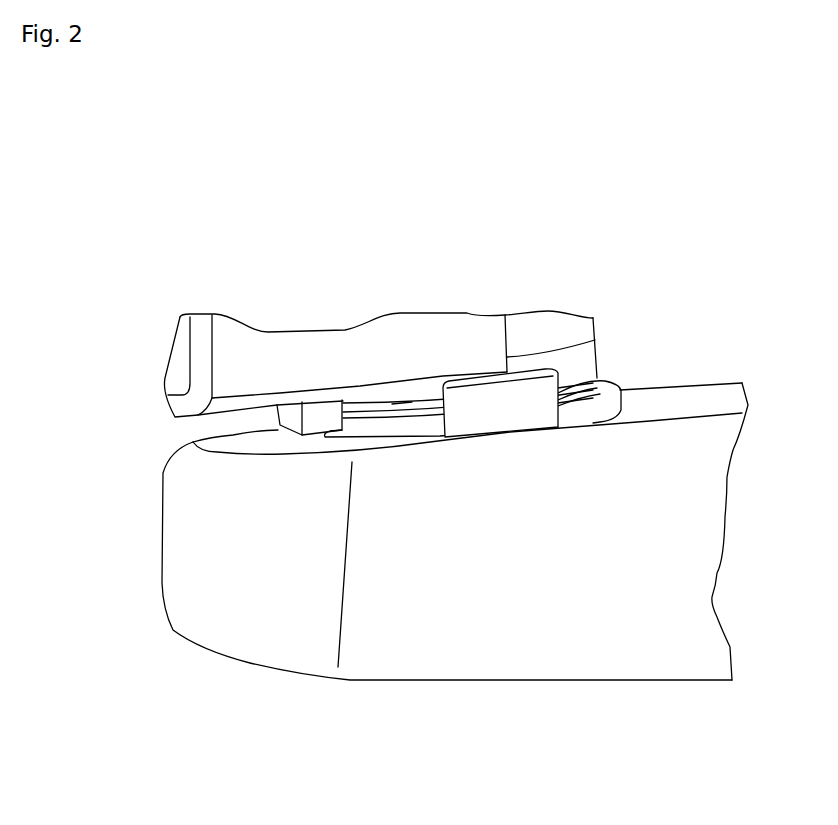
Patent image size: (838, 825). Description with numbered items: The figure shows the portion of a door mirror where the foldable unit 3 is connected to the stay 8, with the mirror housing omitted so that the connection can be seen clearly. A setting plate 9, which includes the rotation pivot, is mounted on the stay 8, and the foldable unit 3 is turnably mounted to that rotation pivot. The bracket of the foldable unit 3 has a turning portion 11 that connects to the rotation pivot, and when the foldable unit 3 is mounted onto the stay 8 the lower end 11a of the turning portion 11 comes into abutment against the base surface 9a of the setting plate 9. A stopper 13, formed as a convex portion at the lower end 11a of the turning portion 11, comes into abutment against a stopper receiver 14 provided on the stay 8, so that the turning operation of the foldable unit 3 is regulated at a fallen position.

The foldable unit 3 is at (472, 318).
The stay 8 is at (572, 660).
The setting plate 9 is at (415, 425).
The base surface 9a is at (402, 408).
The turning portion 11 is at (590, 330).
The lower end 11a is at (575, 380).
The stopper 13 is at (316, 426).
The stopper receiver 14 is at (475, 415).